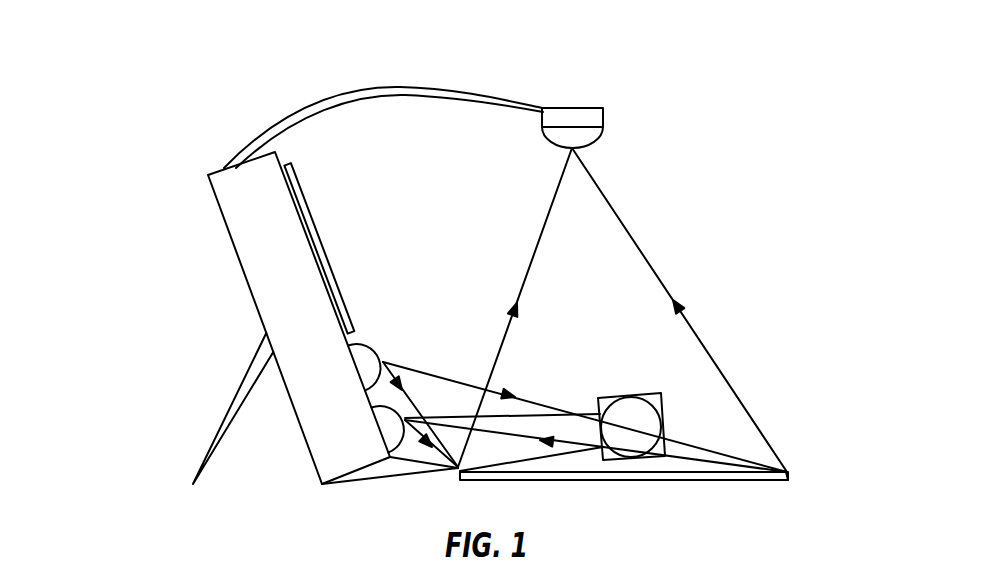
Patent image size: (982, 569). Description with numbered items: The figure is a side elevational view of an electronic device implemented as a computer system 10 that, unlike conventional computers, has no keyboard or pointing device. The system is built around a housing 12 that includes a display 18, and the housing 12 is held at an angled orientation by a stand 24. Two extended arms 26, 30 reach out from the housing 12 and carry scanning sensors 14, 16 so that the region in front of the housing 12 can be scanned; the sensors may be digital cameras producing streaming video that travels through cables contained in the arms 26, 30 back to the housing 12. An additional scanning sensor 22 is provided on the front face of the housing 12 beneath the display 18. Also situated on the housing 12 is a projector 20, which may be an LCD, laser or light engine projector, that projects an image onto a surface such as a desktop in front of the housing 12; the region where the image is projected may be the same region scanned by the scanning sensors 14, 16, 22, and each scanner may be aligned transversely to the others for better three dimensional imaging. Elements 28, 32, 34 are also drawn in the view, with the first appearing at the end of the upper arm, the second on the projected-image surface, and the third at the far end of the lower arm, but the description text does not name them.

The computer system 10 is at (148, 113).
The housing 12 is at (260, 318).
The scanning sensor 14 is at (570, 72).
The scanning sensor 16 is at (570, 392).
The display 18 is at (353, 248).
The projector 20 is at (410, 342).
The scanning sensor 22 is at (431, 401).
The stand 24 is at (201, 408).
The extended arm 26 is at (383, 100).
The camera 28 is at (623, 105).
The extended arm 30 is at (624, 489).
The sample 32 is at (666, 457).
The mirror 34 is at (807, 507).